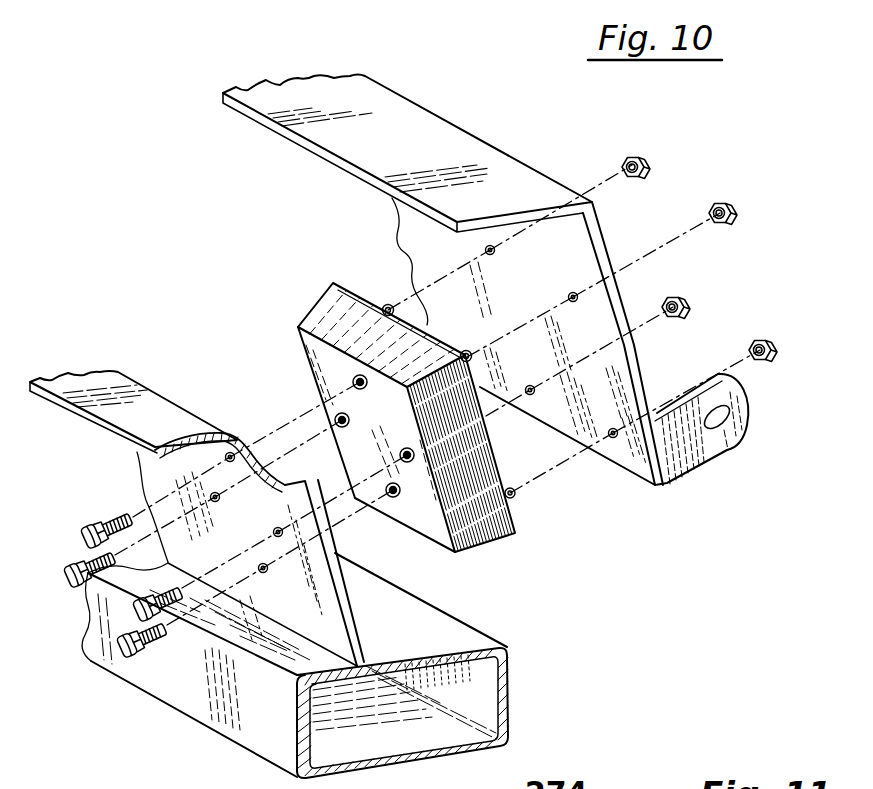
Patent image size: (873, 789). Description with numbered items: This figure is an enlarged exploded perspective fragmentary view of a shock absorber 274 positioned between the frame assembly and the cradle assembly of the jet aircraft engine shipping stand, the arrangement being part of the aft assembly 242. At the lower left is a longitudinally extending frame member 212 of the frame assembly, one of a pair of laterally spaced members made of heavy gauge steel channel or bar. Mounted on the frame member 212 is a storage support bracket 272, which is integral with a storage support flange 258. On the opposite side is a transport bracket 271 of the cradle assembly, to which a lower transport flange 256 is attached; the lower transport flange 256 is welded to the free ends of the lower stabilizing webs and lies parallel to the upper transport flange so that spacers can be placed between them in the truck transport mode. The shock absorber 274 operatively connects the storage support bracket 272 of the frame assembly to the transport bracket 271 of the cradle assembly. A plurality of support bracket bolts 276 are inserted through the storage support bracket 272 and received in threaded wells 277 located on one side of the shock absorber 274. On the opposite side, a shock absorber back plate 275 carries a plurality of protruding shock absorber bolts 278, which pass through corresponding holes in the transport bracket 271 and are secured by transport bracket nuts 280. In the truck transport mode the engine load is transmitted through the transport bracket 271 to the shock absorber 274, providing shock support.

The longitudinally extending frame member 212 is at (272, 715).
The aft assembly 242 is at (194, 298).
The lower transport flange 256 is at (430, 143).
The storage support flange 258 is at (163, 418).
The transport bracket 271 is at (607, 243).
The storage support bracket 272 is at (398, 614).
The shock absorber 274 is at (514, 556).
The shock absorber back plate 275 is at (348, 292).
The support bracket bolt 276 is at (68, 566).
The threaded well 277 is at (352, 381).
The shock absorber bolt 278 is at (387, 305).
The transport bracket nut 280 is at (717, 200).